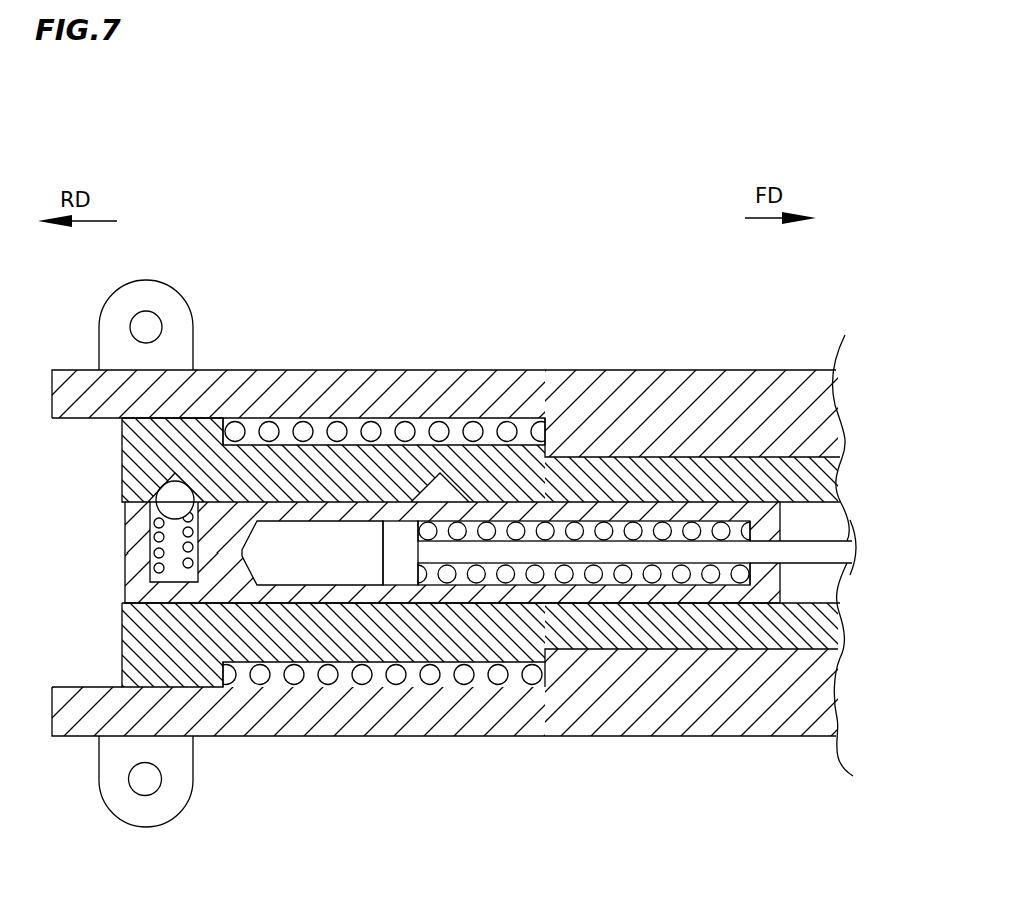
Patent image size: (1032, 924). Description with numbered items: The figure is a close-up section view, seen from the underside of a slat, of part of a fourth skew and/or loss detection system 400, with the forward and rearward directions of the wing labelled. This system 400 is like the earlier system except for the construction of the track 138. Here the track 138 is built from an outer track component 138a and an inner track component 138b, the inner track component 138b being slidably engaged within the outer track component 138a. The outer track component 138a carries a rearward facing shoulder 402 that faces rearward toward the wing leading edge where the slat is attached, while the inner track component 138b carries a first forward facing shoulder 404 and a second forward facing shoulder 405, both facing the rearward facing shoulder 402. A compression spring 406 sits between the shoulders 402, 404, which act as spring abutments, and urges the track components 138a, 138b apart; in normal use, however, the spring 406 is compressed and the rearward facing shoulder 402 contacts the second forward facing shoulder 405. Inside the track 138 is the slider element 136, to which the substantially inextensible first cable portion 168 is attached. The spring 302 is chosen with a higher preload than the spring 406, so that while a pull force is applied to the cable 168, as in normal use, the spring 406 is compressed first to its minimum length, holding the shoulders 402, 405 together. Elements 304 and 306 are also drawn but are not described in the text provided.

The fourth skew and/or loss detection system 400 is at (316, 178).
The track 138 is at (356, 305).
The outer track component 138a is at (383, 402).
The inner track component 138b is at (660, 470).
The rearward facing shoulder 402 is at (545, 432).
The first forward facing shoulder 404 is at (230, 424).
The first cable portion 168 is at (793, 548).
The piston 304 is at (398, 562).
The compression spring 406 is at (393, 680).
The second forward facing shoulder 405 is at (510, 670).
The slider element 136 is at (600, 578).
The spring 302 is at (645, 581).
The bearing end stop 306 is at (752, 580).